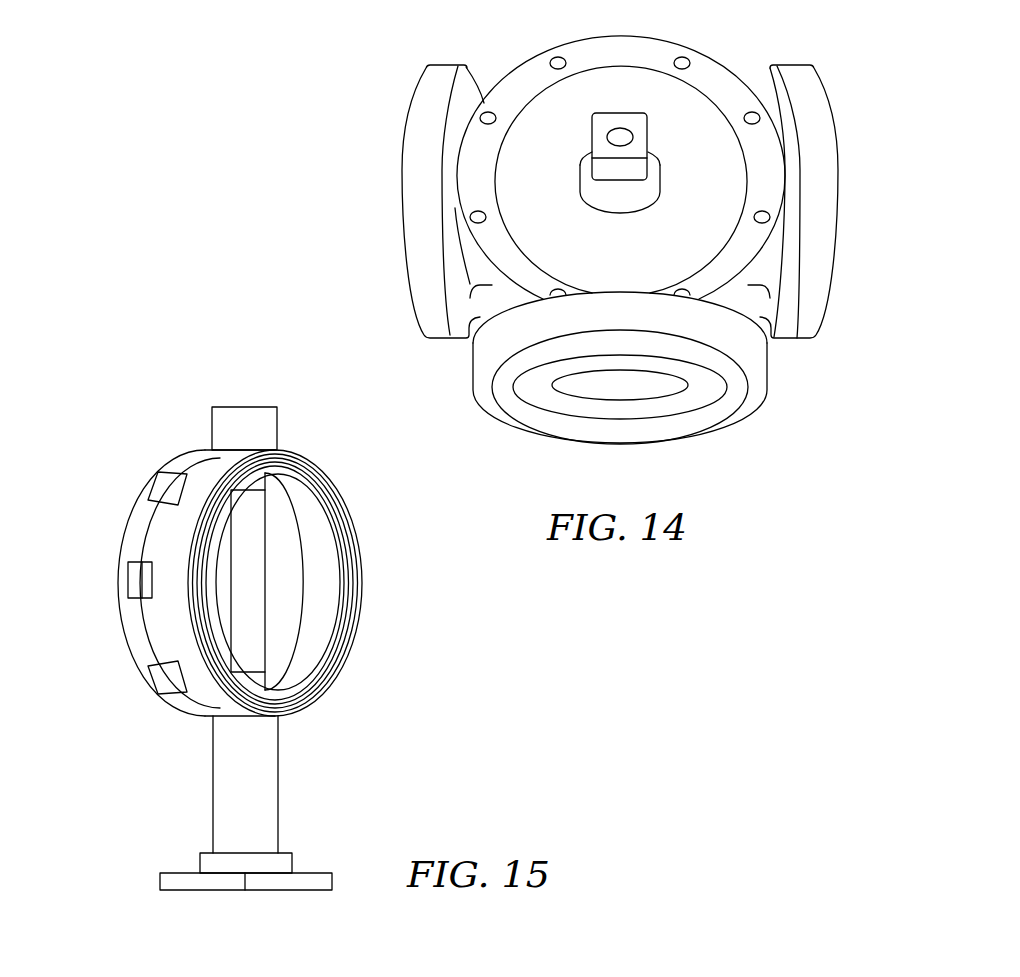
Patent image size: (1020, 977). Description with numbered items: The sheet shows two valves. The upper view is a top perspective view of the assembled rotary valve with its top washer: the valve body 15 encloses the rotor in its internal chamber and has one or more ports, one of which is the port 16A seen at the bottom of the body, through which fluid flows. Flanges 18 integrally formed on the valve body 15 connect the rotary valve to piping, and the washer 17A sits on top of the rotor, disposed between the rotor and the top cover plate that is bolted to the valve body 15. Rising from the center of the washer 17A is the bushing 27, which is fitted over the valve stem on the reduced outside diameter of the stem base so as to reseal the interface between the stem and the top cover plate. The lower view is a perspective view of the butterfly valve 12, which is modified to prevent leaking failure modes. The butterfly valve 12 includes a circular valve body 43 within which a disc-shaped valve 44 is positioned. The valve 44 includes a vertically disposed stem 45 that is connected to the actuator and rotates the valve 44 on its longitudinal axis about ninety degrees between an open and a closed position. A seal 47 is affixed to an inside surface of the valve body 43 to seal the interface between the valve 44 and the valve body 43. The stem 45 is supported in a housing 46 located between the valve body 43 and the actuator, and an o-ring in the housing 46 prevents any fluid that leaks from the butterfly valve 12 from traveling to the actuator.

In FIG. 15, the butterfly valve 12 is at (133, 460).
In FIG. 14, the valve body 15 is at (480, 300).
In FIG. 14, the port 16A is at (620, 387).
In FIG. 14, the washer 17A is at (683, 122).
In FIG. 14, the flanges 18 is at (827, 88).
In FIG. 14, the bushing 27 is at (648, 160).
In FIG. 15, the valve body 43 is at (327, 476).
In FIG. 15, the disc-shaped valve 44 is at (280, 577).
In FIG. 15, the stem 45 is at (243, 603).
In FIG. 15, the housing 46 is at (280, 771).
In FIG. 15, the seal 47 is at (310, 523).